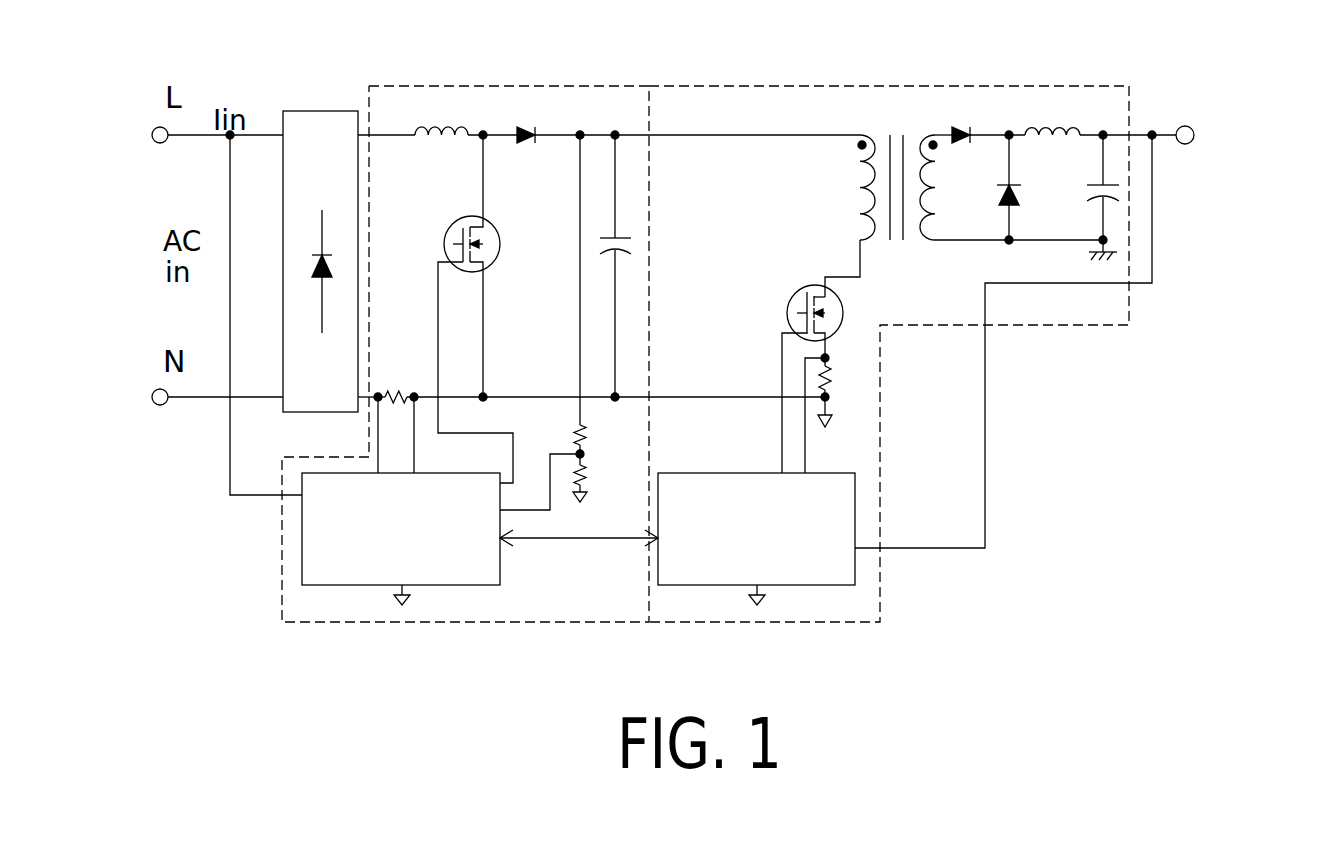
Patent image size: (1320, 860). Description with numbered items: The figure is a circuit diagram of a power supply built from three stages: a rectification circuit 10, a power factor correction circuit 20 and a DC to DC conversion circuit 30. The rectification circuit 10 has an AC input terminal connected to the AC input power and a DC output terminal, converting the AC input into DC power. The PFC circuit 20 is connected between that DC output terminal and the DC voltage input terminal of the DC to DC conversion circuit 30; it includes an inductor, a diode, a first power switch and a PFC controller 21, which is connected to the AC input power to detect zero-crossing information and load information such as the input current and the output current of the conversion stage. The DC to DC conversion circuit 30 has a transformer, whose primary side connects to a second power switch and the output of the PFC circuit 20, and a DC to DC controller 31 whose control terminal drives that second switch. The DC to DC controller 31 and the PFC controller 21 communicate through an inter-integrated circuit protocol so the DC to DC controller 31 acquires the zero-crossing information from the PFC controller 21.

The rectification circuit 10 is at (305, 110).
The power factor correction (PFC) circuit 20 is at (470, 321).
The PFC controller 21 is at (500, 572).
The DC to DC conversion circuit 30 is at (975, 338).
The DC to DC controller 31 is at (755, 473).